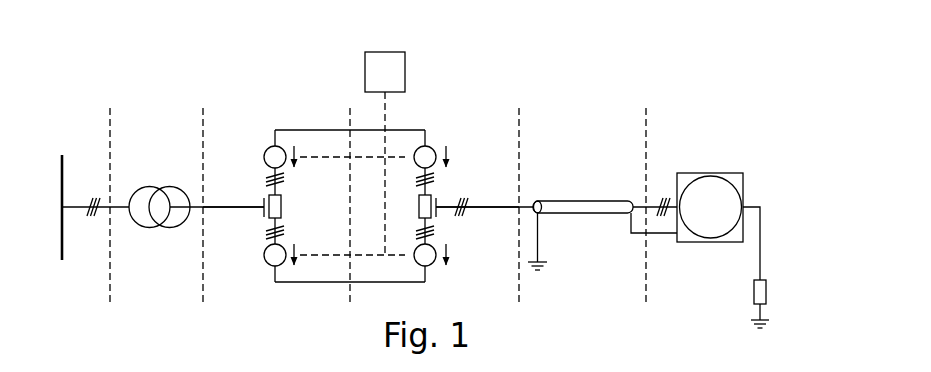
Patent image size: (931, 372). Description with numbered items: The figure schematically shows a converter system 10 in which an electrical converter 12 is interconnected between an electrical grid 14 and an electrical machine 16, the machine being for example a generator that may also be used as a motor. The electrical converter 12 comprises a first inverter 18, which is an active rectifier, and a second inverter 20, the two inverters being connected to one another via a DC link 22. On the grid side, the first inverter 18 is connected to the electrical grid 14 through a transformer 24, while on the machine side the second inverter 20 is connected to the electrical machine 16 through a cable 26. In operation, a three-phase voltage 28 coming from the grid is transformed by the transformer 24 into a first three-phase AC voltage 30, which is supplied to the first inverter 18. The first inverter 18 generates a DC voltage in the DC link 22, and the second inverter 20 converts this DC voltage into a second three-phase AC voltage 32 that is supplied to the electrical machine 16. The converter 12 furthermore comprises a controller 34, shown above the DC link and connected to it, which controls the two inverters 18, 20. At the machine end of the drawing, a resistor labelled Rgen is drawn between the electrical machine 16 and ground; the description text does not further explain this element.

The converter system 10 is at (692, 72).
The electrical converter 12 is at (487, 111).
The electrical grid 14 is at (62, 168).
The electrical machine 16 is at (724, 173).
The first inverter 18 is at (265, 111).
The second inverter 20 is at (436, 111).
The DC link 22 is at (329, 111).
The transformer 24 is at (156, 152).
The cable 26 is at (580, 151).
The three-phase voltage 28 is at (86, 177).
The first three-phase AC voltage 30 is at (232, 179).
The second three-phase AC voltage 32 is at (489, 179).
The controller 34 is at (385, 52).
The generator grounding resistor Rgen is at (768, 296).